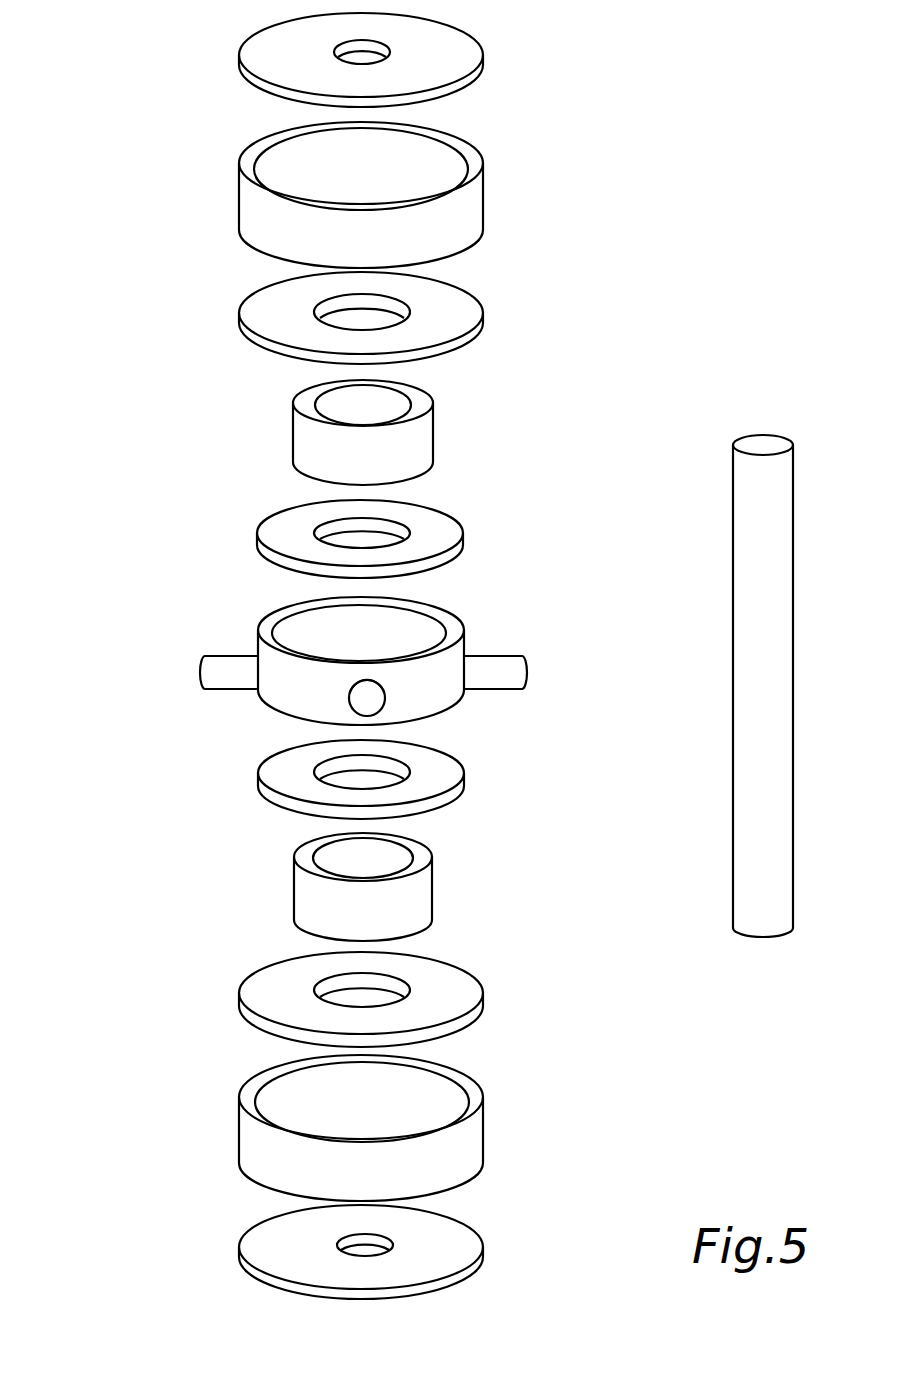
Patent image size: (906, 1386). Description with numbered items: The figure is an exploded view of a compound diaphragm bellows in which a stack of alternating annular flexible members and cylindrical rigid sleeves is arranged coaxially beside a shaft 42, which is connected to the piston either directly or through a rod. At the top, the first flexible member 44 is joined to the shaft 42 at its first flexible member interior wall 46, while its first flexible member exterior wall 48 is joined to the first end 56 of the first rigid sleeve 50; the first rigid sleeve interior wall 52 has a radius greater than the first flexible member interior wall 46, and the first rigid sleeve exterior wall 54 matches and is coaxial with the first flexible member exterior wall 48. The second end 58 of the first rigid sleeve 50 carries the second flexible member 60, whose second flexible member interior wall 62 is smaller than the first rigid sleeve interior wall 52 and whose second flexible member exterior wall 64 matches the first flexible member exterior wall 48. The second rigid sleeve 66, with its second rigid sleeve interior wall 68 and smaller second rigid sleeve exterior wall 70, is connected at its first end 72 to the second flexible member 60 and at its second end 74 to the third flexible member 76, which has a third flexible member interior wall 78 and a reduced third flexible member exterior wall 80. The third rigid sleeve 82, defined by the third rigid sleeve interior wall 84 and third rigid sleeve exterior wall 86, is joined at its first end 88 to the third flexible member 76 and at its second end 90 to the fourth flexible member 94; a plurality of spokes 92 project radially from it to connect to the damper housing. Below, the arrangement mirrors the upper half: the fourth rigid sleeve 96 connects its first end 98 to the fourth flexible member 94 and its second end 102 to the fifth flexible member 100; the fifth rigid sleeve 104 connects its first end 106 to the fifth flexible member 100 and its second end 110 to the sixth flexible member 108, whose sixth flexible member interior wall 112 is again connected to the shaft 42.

The shaft 42 is at (765, 437).
The first flexible member 44 is at (349, 60).
The first flexible member interior wall 46 is at (376, 50).
The first flexible member exterior wall 48 is at (487, 70).
The first rigid sleeve 50 is at (339, 192).
The first rigid sleeve interior wall 52 is at (460, 162).
The first rigid sleeve exterior wall 54 is at (487, 195).
The first end 56 is at (485, 157).
The second end 58 is at (478, 243).
The second flexible member 60 is at (339, 305).
The second flexible member interior wall 62 is at (393, 312).
The second flexible member exterior wall 64 is at (490, 325).
The second rigid sleeve 66 is at (333, 443).
The second rigid sleeve interior wall 68 is at (400, 405).
The second rigid sleeve exterior wall 70 is at (437, 430).
The first end 72 is at (437, 400).
The second end 74 is at (430, 473).
The third flexible member 76 is at (315, 525).
The third flexible member interior wall 78 is at (393, 532).
The third flexible member exterior wall 80 is at (467, 542).
The third rigid sleeve 82 is at (352, 677).
The third rigid sleeve interior wall 84 is at (435, 630).
The third rigid sleeve exterior wall 86 is at (470, 645).
The first end 88 is at (468, 622).
The second end 90 is at (462, 710).
The spokes 92 is at (196, 666).
The fourth flexible member 94 is at (361, 779).
The fourth rigid sleeve 96 is at (446, 884).
The first end 98 is at (433, 852).
The fifth flexible member 100 is at (361, 999).
The second end 102 is at (430, 928).
The fifth rigid sleeve 104 is at (439, 1139).
The first end 106 is at (485, 1093).
The sixth flexible member 108 is at (269, 1252).
The second end 110 is at (480, 1178).
The sixth flexible member interior wall 112 is at (382, 1245).